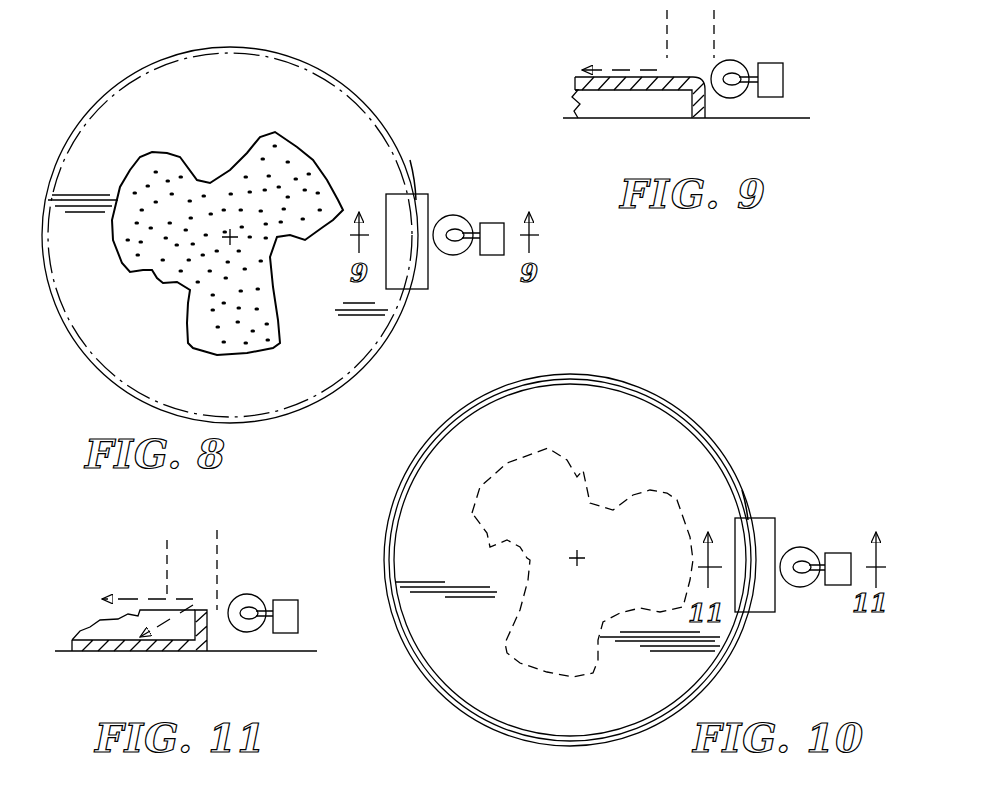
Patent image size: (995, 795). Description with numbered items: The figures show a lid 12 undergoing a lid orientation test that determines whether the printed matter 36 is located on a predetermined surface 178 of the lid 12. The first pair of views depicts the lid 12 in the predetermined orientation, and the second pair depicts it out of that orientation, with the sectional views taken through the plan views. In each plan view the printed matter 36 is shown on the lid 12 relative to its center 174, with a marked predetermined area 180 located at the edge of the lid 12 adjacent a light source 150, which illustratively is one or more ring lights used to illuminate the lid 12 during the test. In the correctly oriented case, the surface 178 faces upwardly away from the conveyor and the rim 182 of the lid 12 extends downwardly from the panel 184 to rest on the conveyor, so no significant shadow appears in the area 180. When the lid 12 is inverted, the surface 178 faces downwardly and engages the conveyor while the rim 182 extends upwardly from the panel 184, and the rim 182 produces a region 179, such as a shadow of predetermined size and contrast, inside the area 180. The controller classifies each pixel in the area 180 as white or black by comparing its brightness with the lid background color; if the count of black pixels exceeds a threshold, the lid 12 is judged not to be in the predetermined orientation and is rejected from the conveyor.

In FIG. 8, the lid 12 is at (118, 79).
In FIG. 11, the lid 12 is at (115, 571).
In FIG. 10, the lid 12 is at (691, 399).
In FIG. 8, the printed matter 36 is at (163, 165).
In FIG. 10, the printed matter 36 is at (600, 458).
In FIG. 8, the light source 150 is at (488, 222).
In FIG. 9, the light source 150 is at (771, 62).
In FIG. 11, the light source 150 is at (285, 600).
In FIG. 10, the light source 150 is at (835, 553).
In FIG. 8, the center 174 is at (232, 237).
In FIG. 10, the center 174 is at (582, 557).
In FIG. 9, the predetermined surface 178 is at (612, 76).
In FIG. 11, the predetermined surface 178 is at (100, 655).
In FIG. 10, the region 179 is at (748, 547).
In FIG. 8, the predetermined area 180 is at (420, 197).
In FIG. 10, the predetermined area 180 is at (768, 518).
In FIG. 8, the rim 182 is at (405, 162).
In FIG. 9, the rim 182 is at (692, 102).
In FIG. 11, the rim 182 is at (207, 631).
In FIG. 10, the rim 182 is at (750, 490).
In FIG. 8, the panel 184 is at (310, 111).
In FIG. 9, the panel 184 is at (613, 104).
In FIG. 11, the panel 184 is at (112, 632).
In FIG. 10, the panel 184 is at (594, 412).